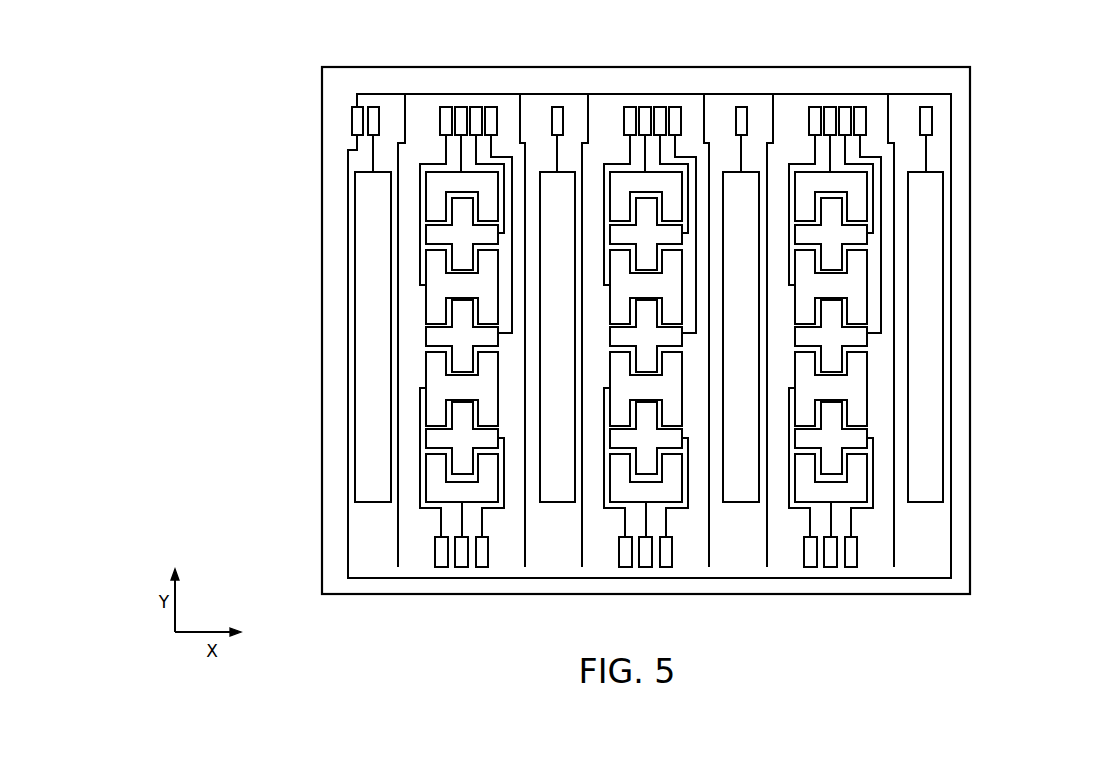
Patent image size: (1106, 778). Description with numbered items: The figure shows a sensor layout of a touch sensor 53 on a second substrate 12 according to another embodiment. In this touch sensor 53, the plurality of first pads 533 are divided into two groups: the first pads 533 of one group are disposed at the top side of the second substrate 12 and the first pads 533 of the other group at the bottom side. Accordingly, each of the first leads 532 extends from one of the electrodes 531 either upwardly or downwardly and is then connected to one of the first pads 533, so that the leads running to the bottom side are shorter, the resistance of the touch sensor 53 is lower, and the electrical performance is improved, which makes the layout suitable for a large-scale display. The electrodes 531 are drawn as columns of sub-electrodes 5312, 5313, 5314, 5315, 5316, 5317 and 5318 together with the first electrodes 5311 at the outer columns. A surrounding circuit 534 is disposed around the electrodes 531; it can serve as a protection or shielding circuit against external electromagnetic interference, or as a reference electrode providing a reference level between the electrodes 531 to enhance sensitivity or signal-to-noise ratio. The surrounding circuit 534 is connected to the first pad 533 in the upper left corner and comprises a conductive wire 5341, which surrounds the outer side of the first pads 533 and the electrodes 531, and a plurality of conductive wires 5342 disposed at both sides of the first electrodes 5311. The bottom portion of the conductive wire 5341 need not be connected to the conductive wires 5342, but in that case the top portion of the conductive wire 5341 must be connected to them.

The second substrate 12 is at (321, 93).
The touch sensor 53 is at (914, 80).
The electrodes 531 is at (247, 175).
The first electrodes 5311 is at (370, 207).
The first sub-electrode 5312 is at (440, 183).
The second sub-electrode 5313 is at (432, 234).
The third sub-electrode 5314 is at (436, 281).
The fourth sub-electrode 5315 is at (432, 337).
The fifth sub-electrode 5316 is at (436, 383).
The sixth sub-electrode 5317 is at (432, 439).
The seventh sub-electrode 5318 is at (432, 489).
The first leads 532 is at (433, 164).
The first pads 533 is at (355, 106).
The surrounding circuit 534 is at (584, 86).
The conductive wire 5341 is at (784, 93).
The conductive wires 5342 is at (710, 548).